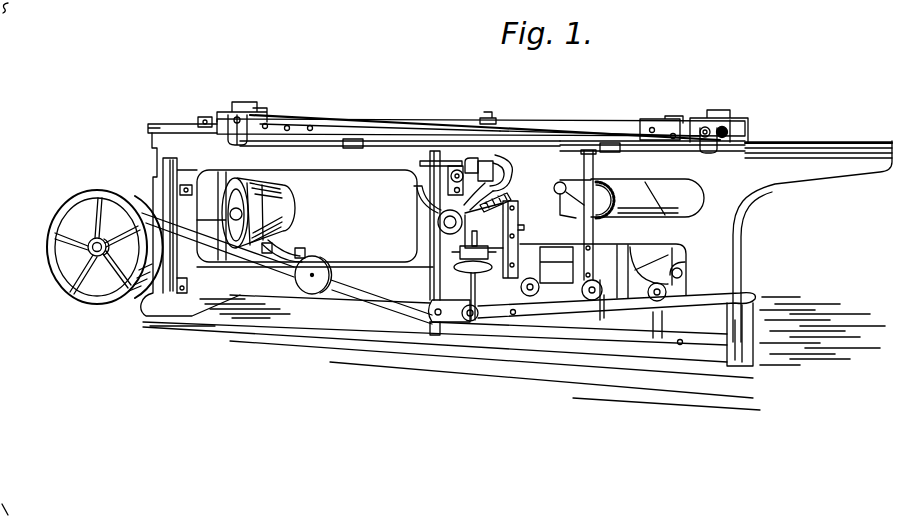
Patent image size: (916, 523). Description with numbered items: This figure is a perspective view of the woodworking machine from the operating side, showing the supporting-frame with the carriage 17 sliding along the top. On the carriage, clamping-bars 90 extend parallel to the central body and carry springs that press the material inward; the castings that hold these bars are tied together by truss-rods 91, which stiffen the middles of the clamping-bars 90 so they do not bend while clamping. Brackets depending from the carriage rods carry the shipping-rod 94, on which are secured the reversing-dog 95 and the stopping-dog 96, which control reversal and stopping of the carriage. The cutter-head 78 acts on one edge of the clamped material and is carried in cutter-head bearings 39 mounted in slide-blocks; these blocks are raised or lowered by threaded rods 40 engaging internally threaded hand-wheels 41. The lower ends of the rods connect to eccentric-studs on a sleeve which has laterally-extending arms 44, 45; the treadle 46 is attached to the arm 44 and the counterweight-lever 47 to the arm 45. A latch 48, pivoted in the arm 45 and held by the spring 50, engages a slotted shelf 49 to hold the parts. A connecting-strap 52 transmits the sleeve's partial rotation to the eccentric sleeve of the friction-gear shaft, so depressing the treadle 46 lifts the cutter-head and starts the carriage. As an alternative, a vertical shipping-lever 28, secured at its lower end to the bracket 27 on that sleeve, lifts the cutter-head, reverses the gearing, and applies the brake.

The carriage 17 is at (318, 126).
The truss-rods 91 is at (390, 120).
The clamping-bars 90 is at (508, 130).
The shipping-rod 94 is at (306, 143).
The reversing-dog 95 is at (349, 148).
The stopping-dog 96 is at (618, 152).
The slotted shelf 49 is at (420, 163).
The cutter-head 78 is at (481, 163).
The cutter-head bearings 39 is at (496, 177).
The shipping-lever 28 is at (584, 187).
The spring 50 is at (426, 214).
The latch 48 is at (430, 249).
The threaded rods 40 is at (482, 240).
The connecting-strap 52 is at (547, 267).
The hand-wheels 41 is at (455, 270).
The counterweight-lever 47 is at (380, 298).
The arm 45 is at (450, 312).
The treadle 46 is at (616, 308).
The extension or bracket 27 is at (610, 306).
The arm 44 is at (503, 327).